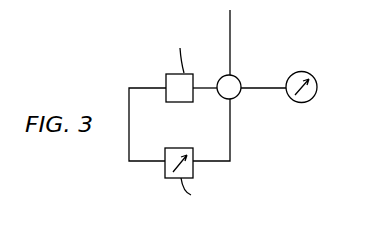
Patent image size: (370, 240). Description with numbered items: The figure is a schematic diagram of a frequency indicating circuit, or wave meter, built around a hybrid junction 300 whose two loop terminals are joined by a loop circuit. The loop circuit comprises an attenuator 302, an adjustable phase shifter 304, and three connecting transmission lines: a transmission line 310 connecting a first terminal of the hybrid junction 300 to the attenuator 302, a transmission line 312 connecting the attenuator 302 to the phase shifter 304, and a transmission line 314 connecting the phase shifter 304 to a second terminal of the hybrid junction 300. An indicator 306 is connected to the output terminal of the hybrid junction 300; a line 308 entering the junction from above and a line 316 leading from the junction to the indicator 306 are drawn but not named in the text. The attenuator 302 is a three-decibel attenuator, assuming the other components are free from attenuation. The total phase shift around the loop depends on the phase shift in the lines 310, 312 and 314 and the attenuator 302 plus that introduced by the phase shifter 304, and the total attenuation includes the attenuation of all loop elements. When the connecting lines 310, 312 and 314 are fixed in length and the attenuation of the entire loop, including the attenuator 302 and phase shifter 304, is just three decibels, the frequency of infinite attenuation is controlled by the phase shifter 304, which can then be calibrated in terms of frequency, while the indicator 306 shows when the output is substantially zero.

The hybrid junction 300 is at (239, 77).
The attenuator 302 is at (166, 75).
The adjustable phase shifter 304 is at (165, 170).
The indicator 306 is at (312, 99).
The input line 308 is at (232, 22).
The transmission line 310 is at (205, 92).
The transmission line 312 is at (130, 126).
The transmission line 314 is at (231, 143).
The output line to meter 316 is at (265, 91).